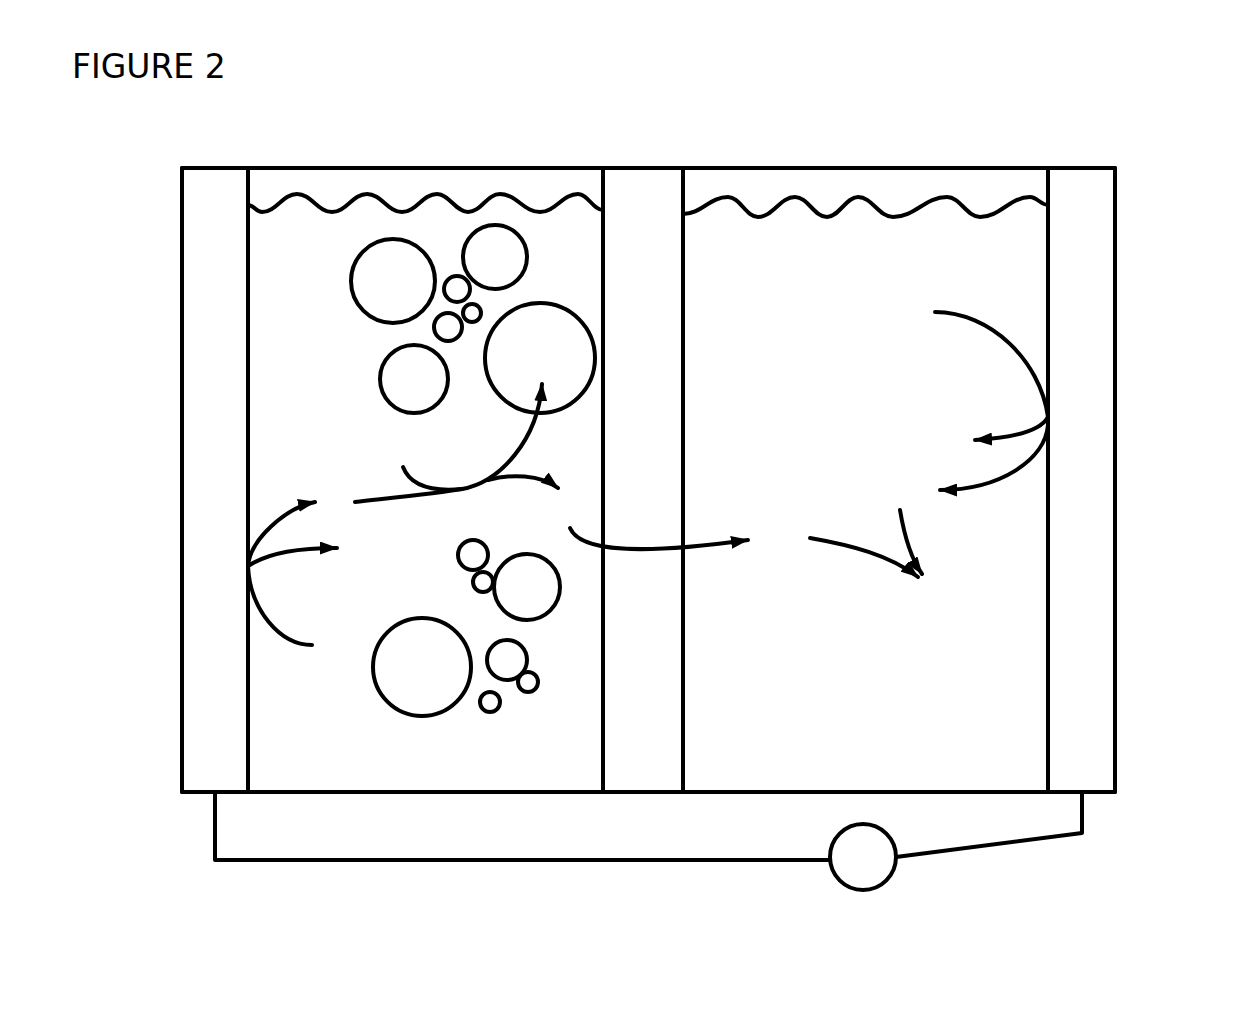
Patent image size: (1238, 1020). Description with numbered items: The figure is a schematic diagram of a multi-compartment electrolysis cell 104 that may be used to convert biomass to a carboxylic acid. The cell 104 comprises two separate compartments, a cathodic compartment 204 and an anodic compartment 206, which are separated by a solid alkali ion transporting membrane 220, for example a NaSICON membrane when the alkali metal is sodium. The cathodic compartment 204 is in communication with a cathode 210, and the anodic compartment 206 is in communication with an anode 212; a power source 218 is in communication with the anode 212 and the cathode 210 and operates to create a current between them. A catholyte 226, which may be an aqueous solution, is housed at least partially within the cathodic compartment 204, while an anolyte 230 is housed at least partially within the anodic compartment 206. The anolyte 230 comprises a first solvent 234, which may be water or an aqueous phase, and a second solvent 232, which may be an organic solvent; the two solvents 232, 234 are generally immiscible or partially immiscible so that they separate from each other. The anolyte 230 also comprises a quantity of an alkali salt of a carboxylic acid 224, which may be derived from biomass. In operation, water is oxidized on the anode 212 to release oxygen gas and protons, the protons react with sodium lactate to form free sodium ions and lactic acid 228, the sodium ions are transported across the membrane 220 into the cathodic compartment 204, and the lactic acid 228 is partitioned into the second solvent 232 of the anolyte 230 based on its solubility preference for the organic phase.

The electrolysis cell 104 is at (1147, 152).
The cathodic compartment 204 is at (828, 677).
The anodic compartment 206 is at (357, 731).
The cathode 210 is at (1117, 705).
The anode 212 is at (182, 440).
The power source 218 is at (863, 890).
The solid alkali ion transporting membrane 220 is at (643, 792).
The alkali salt of a carboxylic acid 224 is at (380, 378).
The catholyte 226 is at (937, 203).
The lactic acid 228 is at (528, 312).
The anolyte 230 is at (482, 195).
The second solvent 232 is at (396, 272).
The first solvent 234 is at (318, 289).